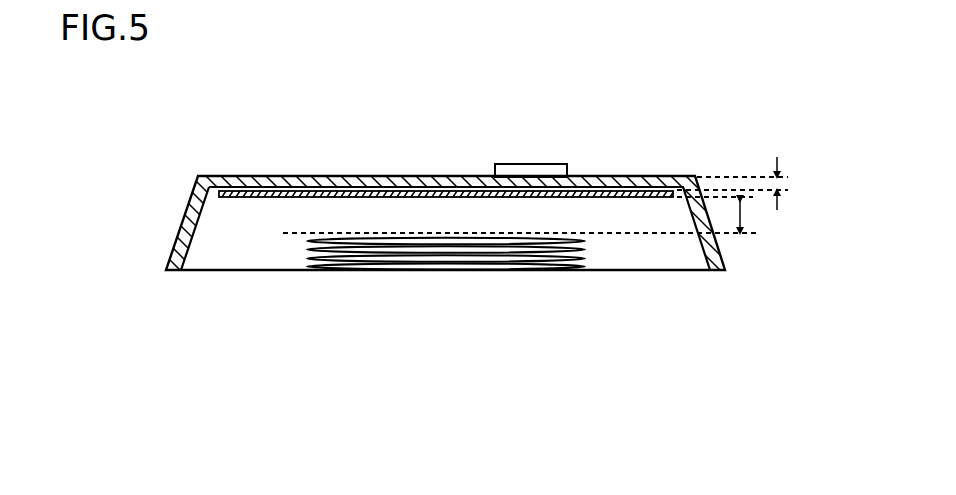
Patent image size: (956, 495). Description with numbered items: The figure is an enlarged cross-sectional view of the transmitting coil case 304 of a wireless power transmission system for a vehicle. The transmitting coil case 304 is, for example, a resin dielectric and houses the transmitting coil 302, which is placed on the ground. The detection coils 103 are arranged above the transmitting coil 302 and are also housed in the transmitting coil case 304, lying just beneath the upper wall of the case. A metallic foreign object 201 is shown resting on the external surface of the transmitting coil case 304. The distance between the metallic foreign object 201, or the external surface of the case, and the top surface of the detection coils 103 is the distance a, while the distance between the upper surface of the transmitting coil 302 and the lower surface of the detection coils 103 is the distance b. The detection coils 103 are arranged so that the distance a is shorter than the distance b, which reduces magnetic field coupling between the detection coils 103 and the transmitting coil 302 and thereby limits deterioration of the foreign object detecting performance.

The detection coil 103 is at (633, 191).
The metallic foreign object 201 is at (503, 164).
The transmitting coil 302 is at (435, 262).
The transmitting coil case 304 is at (185, 218).
The distance a is at (786, 183).
The distance b is at (747, 218).